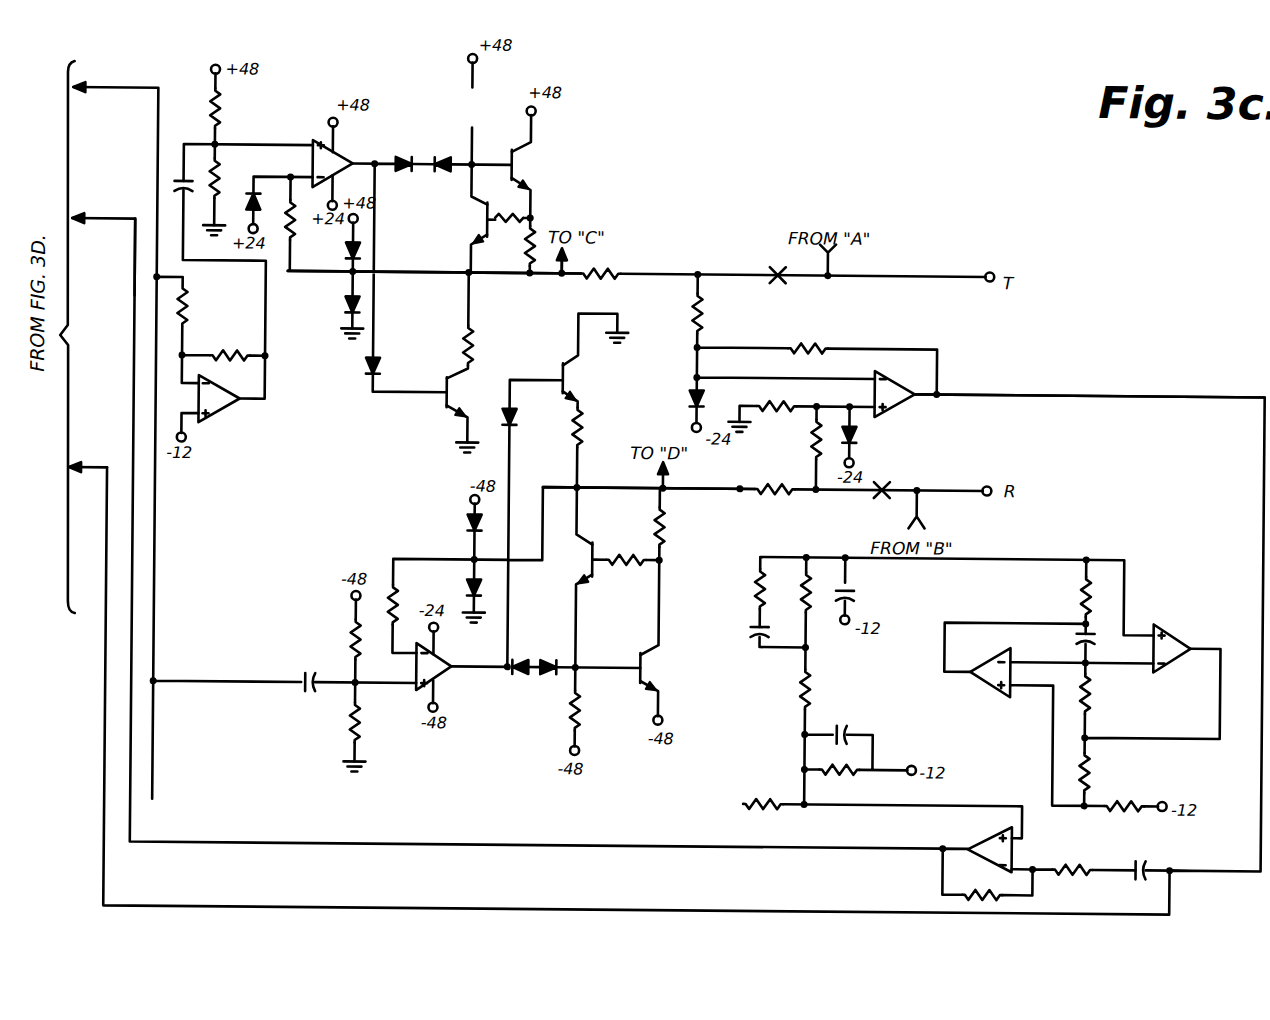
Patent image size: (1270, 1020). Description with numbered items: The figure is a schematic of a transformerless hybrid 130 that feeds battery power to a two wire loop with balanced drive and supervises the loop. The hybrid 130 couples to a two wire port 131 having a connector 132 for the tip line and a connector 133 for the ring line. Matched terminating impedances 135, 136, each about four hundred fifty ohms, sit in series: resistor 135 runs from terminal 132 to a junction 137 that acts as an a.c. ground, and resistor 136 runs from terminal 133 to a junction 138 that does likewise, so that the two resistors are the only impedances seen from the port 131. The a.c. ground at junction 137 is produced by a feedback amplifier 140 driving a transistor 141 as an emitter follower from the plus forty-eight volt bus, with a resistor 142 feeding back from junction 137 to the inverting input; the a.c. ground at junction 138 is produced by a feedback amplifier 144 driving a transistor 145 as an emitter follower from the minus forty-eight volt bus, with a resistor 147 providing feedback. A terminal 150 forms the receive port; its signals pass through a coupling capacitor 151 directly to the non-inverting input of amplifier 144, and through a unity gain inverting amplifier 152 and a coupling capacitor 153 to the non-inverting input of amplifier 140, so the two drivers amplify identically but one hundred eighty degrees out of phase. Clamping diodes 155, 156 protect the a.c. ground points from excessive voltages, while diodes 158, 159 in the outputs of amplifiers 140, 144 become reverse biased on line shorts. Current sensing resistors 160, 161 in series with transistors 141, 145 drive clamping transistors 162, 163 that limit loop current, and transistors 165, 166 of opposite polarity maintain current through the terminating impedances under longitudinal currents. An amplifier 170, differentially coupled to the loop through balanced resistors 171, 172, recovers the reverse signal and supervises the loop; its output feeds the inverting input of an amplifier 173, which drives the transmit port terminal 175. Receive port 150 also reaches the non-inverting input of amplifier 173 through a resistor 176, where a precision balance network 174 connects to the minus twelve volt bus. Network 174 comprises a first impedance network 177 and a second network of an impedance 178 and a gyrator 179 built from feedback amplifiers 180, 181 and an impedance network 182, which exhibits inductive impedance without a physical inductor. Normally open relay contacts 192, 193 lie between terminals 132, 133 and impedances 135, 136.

The hybrid 130 is at (661, 215).
The two wire port 131 is at (989, 370).
The connector for a tip line 132 is at (987, 267).
The connector for a ring line 133 is at (989, 483).
The terminating impedance 135 is at (594, 269).
The terminating impedance 136 is at (770, 496).
The junction 137 is at (557, 278).
The junction 138 is at (737, 492).
The feedback amplifier 140 is at (309, 148).
The transistor 141 is at (516, 170).
The resistor 142 is at (292, 235).
The feedback amplifier 144 is at (449, 672).
The transistor 145 is at (667, 664).
The resistor 147 is at (389, 584).
The terminal 150 is at (85, 87).
The coupling capacitor 151 is at (304, 679).
The amplifier 152 is at (208, 407).
The coupling capacitor 153 is at (173, 187).
The clamping diodes 155 is at (357, 284).
The clamping diodes 156 is at (471, 581).
The diodes 158 is at (439, 155).
The diodes 159 is at (516, 681).
The current sensing resistor 160 is at (531, 232).
The current sensing resistor 161 is at (665, 540).
The clamping transistor 162 is at (475, 216).
The clamping transistor 163 is at (598, 578).
The transistor 165 is at (438, 402).
The transistor 166 is at (558, 376).
The amplifier 170 is at (882, 404).
The resistor 171 is at (702, 313).
The resistor 172 is at (810, 443).
The amplifier 173 is at (990, 837).
The precision balance network 174 is at (902, 636).
The terminal 175 is at (105, 221).
The resistor 176 is at (770, 795).
The first impedance network 177 is at (844, 746).
The impedance 178 is at (820, 638).
The gyrator 179 is at (1015, 712).
The feedback amplifier 180 is at (988, 677).
The feedback amplifier 181 is at (1172, 631).
The impedance network 182 is at (1118, 758).
The relay contacts 192 is at (770, 267).
The relay contacts 193 is at (874, 499).